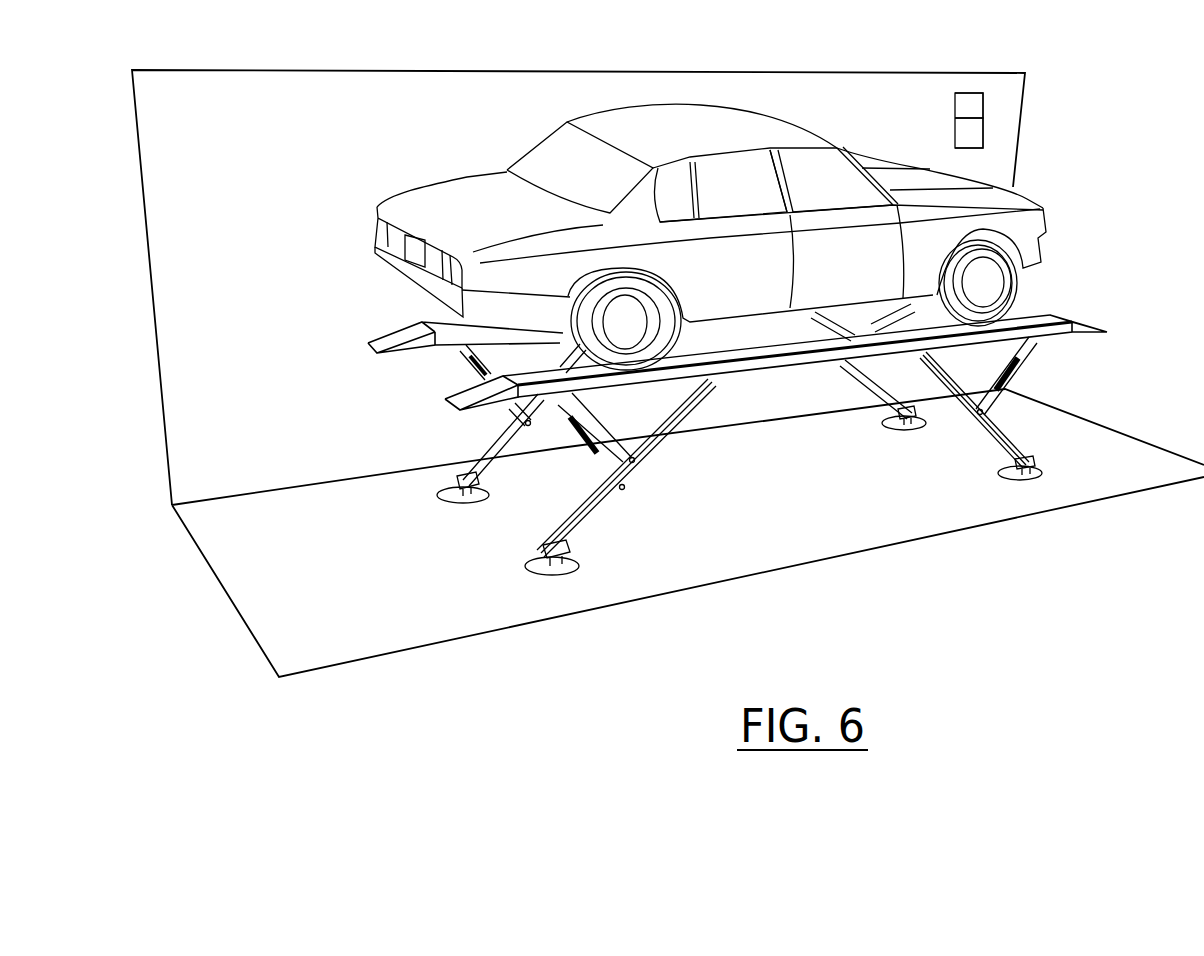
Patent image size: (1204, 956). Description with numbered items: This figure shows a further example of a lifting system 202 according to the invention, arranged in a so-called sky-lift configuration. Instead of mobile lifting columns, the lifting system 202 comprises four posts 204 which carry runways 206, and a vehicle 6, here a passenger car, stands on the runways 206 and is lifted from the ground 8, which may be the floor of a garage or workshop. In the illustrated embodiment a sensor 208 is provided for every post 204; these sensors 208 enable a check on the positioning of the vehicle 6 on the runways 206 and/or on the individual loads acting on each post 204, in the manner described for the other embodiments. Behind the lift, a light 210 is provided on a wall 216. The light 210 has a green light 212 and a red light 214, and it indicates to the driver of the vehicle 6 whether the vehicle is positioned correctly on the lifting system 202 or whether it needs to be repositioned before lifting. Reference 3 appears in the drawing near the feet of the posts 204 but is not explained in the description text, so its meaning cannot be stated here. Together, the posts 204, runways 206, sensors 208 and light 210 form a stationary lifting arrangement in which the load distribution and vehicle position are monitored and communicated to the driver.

The wall 216 is at (377, 90).
The light 210 is at (1012, 108).
The red light 214 is at (955, 105).
The green light 212 is at (957, 133).
The vehicle 6 is at (607, 115).
The lifting system 202 is at (285, 305).
The runway 206 is at (1050, 317).
The post 204 is at (502, 434).
The sensor 208 is at (445, 497).
The foot anchor 3 is at (457, 488).
The ground 8 is at (770, 562).